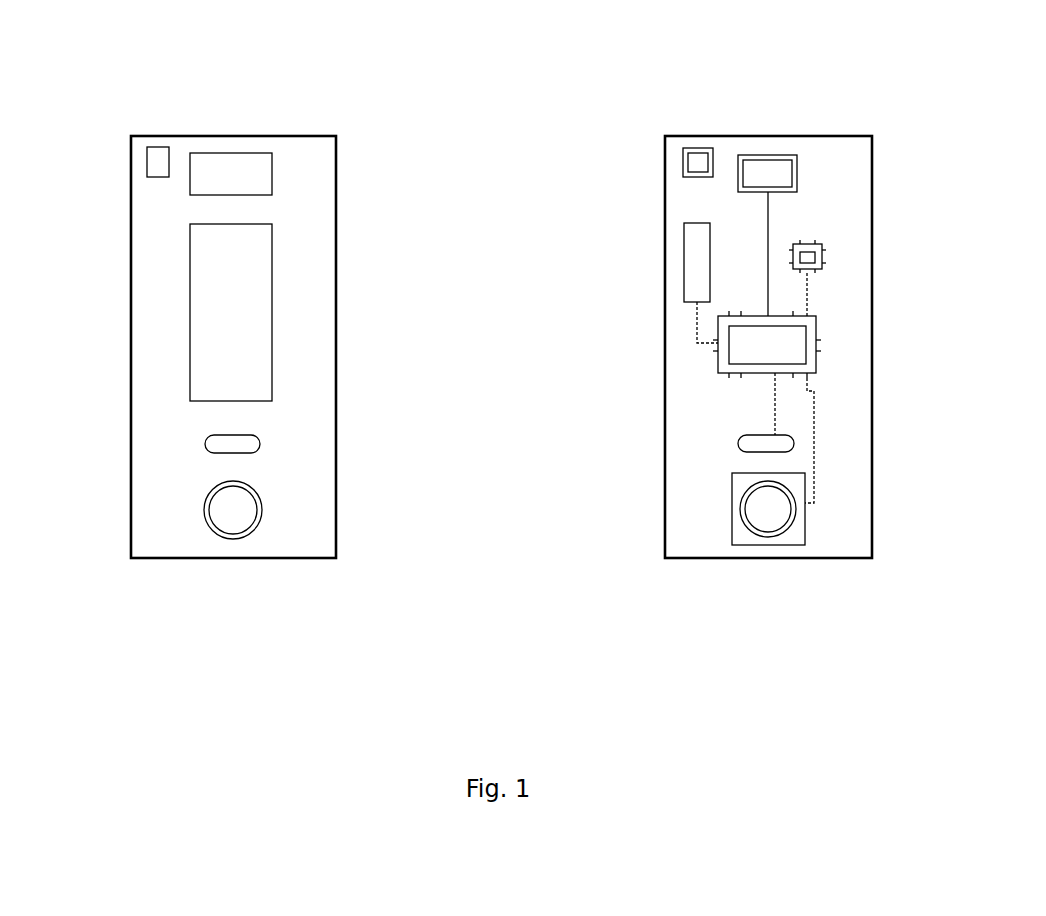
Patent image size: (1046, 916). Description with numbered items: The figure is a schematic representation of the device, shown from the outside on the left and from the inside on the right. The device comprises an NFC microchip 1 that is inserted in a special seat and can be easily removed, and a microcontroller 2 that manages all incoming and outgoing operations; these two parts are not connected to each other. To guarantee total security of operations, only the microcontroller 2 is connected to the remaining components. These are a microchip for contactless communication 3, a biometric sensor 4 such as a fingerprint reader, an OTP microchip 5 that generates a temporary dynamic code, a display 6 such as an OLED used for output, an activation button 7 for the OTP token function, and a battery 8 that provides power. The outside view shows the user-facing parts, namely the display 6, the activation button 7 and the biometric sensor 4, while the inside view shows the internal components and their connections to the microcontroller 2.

The NFC microchip 1 is at (180, 147).
The microcontroller 2 is at (818, 360).
The microchip for contactless communication 3 is at (735, 195).
The biometric sensor 4 is at (745, 535).
The OTP microchip 5 is at (825, 245).
The display 6 is at (185, 330).
The activation button 7 is at (738, 451).
The battery 8 is at (678, 282).